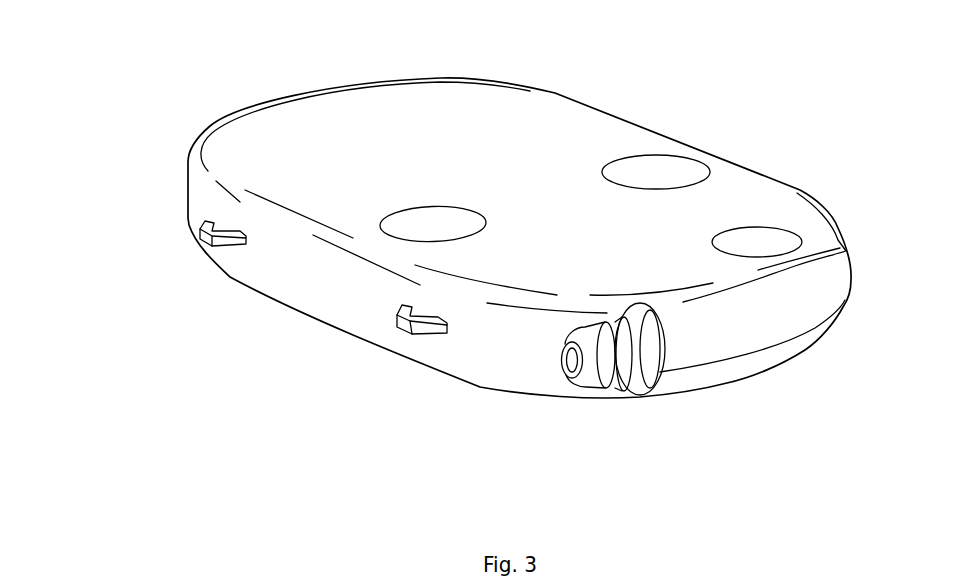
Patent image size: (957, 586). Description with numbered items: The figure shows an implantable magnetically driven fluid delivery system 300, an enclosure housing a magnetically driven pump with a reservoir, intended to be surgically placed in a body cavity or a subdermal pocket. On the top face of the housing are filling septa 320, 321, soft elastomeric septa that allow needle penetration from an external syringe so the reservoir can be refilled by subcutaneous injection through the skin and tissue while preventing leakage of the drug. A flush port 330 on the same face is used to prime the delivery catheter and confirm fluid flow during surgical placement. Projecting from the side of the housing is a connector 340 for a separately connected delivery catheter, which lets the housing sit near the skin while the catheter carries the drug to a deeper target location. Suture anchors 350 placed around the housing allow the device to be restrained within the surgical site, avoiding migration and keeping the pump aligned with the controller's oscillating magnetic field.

The implantable magnetically driven fluid delivery system 300 is at (198, 44).
The filling septum 320 is at (427, 221).
The filling septum 321 is at (662, 177).
The flush port 330 is at (733, 243).
The connector 340 is at (590, 373).
The suture anchors 350 is at (228, 243).